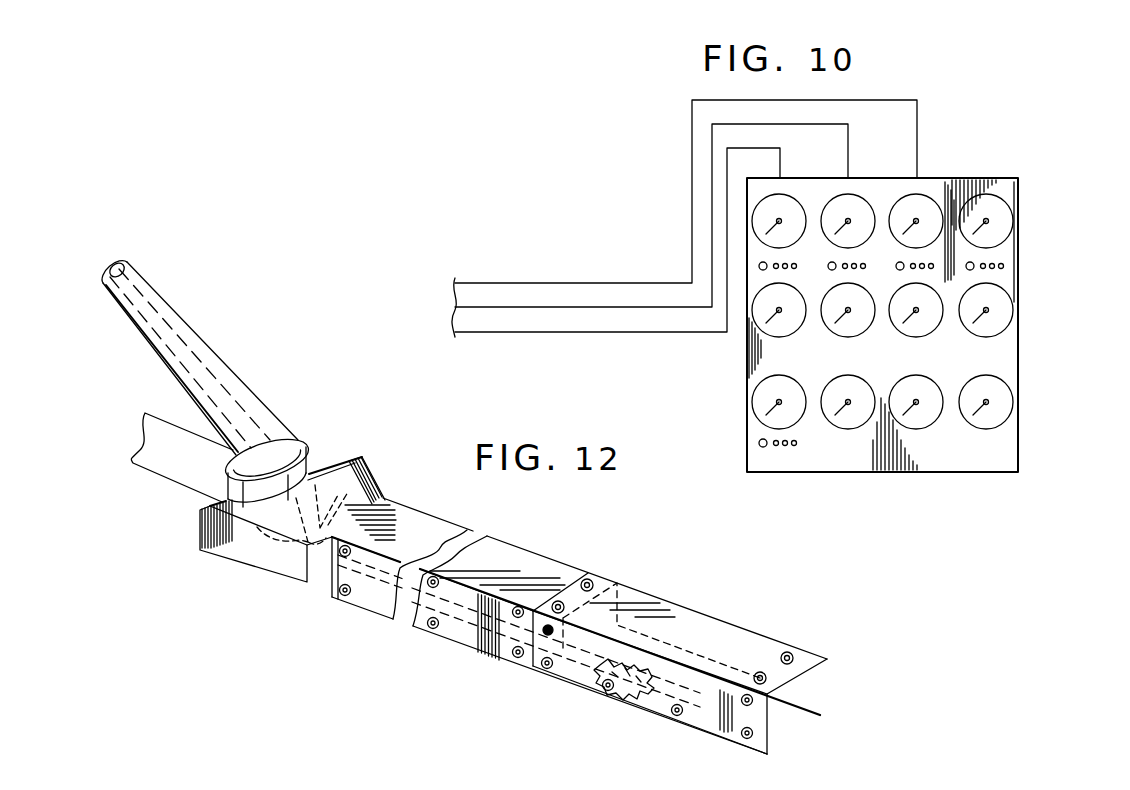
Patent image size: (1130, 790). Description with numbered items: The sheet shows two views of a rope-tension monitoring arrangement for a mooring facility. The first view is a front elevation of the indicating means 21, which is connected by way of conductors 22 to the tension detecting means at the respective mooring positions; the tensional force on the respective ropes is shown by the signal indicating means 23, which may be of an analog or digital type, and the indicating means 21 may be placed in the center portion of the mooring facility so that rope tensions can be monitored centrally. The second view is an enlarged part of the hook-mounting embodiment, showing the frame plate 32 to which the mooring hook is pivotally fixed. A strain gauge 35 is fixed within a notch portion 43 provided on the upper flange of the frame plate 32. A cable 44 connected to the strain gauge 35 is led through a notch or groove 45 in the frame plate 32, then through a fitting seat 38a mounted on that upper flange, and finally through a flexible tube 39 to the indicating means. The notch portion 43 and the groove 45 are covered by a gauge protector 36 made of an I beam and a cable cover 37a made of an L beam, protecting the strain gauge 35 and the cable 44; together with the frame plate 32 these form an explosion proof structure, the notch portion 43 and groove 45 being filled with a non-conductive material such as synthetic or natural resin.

In FIG. 10, the indicating means 21 is at (965, 160).
In FIG. 10, the conductors 22 is at (566, 262).
In FIG. 10, the signal indicating means 23 is at (1002, 228).
In FIG. 12, the frame plate 32 is at (810, 678).
In FIG. 12, the strain gauge 35 is at (634, 692).
In FIG. 12, the gauge protector 36 is at (562, 664).
In FIG. 12, the cable cover 37a is at (372, 595).
In FIG. 12, the fitting seat 38a is at (240, 548).
In FIG. 12, the flexible tube 39 is at (190, 335).
In FIG. 12, the notch portion 43 is at (707, 703).
In FIG. 12, the cable 44 is at (468, 610).
In FIG. 12, the notch or groove 45 is at (423, 595).